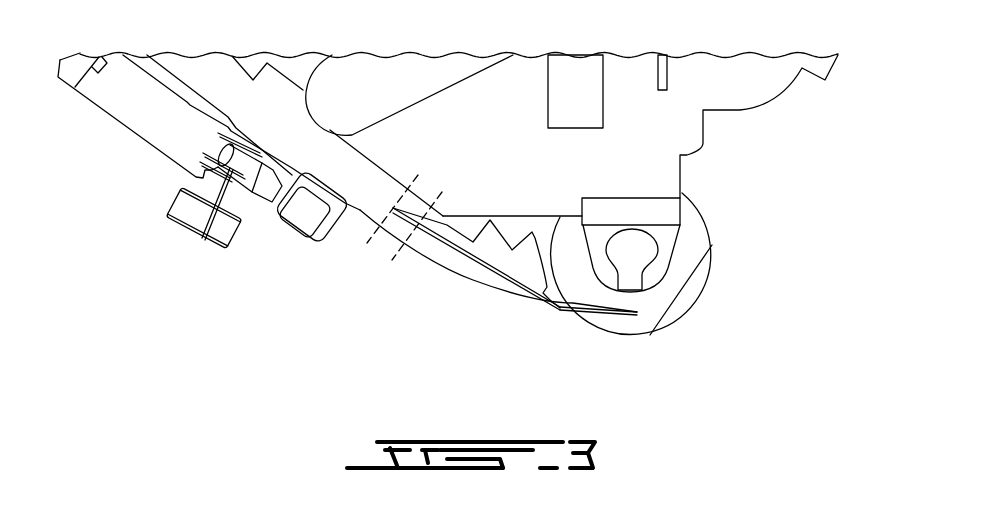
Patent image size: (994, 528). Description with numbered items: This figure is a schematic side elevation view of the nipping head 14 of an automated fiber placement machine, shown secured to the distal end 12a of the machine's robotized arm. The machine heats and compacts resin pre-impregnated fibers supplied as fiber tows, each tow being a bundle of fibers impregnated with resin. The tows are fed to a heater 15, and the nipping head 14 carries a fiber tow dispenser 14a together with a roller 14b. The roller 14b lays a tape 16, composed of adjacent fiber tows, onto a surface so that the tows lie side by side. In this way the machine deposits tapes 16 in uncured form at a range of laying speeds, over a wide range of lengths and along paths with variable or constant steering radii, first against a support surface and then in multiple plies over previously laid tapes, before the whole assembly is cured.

The distal end 12a is at (533, 48).
The nipping head 14 is at (778, 178).
The fiber tow dispenser 14a is at (470, 300).
The roller 14b is at (650, 326).
The heater 15 is at (325, 240).
The tape 16 is at (447, 272).